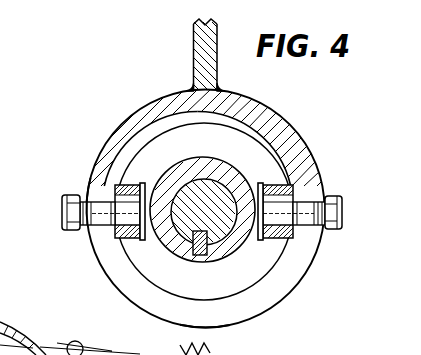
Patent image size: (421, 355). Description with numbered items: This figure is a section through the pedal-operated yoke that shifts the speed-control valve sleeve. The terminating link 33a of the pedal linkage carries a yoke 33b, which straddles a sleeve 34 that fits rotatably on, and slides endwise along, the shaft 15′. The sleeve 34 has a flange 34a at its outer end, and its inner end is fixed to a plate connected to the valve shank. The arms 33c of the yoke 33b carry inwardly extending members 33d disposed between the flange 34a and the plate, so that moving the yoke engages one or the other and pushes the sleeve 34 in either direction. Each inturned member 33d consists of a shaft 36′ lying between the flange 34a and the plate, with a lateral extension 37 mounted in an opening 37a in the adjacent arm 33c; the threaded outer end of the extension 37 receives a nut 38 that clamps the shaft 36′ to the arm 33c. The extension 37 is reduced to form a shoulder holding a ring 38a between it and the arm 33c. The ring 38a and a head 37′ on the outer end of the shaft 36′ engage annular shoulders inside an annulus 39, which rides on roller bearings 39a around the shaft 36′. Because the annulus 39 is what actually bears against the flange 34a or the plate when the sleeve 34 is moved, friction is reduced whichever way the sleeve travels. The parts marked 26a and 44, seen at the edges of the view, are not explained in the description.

The terminating link 33a is at (193, 50).
The yoke 33b is at (144, 104).
The yoke arms 33c is at (282, 128).
The inwardly extending members 33d is at (266, 258).
The roller bearings 39a is at (314, 151).
The flange 34a is at (285, 266).
The sleeve 34 is at (178, 249).
The shaft 36′ is at (171, 196).
The head 37′ is at (167, 178).
The shaft 15′ is at (230, 157).
The lateral extension 37 is at (110, 229).
The nut 38 is at (70, 213).
The ring 38a is at (125, 234).
The annulus 39 is at (122, 238).
The opening 37a is at (90, 178).
The plate rim 26a is at (252, 311).
The adjacent member 44 is at (81, 347).